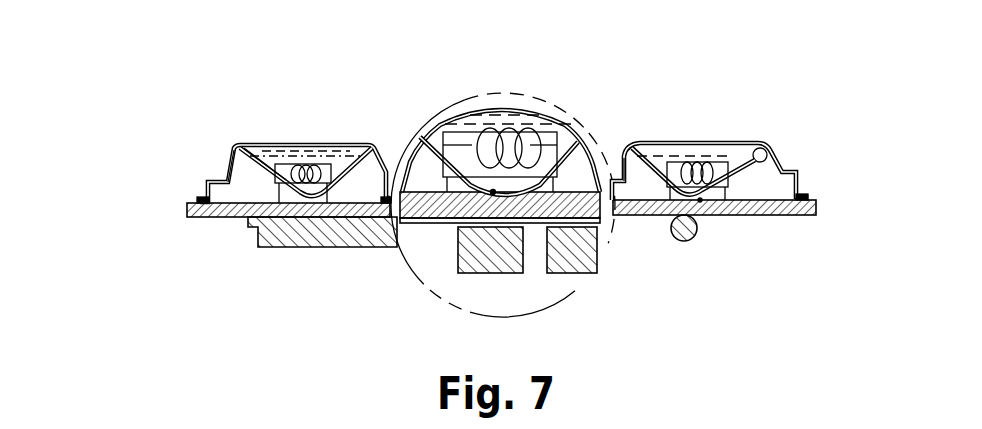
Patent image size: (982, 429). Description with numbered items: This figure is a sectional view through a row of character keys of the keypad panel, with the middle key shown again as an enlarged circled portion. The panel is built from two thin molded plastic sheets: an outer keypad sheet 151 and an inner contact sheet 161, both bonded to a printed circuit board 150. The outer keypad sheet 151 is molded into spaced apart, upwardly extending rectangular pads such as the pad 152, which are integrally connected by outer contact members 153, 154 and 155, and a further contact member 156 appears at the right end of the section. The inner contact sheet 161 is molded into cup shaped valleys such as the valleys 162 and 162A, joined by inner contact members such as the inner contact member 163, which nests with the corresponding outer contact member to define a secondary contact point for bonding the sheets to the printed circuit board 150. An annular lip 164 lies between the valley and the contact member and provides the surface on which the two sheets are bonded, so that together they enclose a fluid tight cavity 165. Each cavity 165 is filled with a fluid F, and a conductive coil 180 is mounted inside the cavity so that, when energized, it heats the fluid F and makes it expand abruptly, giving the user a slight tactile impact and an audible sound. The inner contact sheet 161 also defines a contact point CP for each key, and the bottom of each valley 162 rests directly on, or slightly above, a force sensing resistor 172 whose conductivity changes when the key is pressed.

The printed circuit board 150 is at (803, 216).
The outer keypad sheet 151 is at (697, 140).
The pad 152 is at (228, 134).
The outer contact member 153 is at (198, 190).
The contact member 154 is at (396, 146).
The contact member 155 is at (611, 148).
The cover foot (right) 156 is at (811, 177).
The inner contact sheet 161 is at (768, 150).
The valley 162 is at (343, 176).
The valley 162A is at (541, 131).
The inner contact member 163 is at (217, 203).
The annular lip 164 is at (236, 190).
The cavity 165 is at (287, 162).
The force sensing resistor 172 is at (275, 198).
The conductive coil 180 is at (315, 168).
The fluid F is at (347, 162).
The contact point CP is at (470, 193).